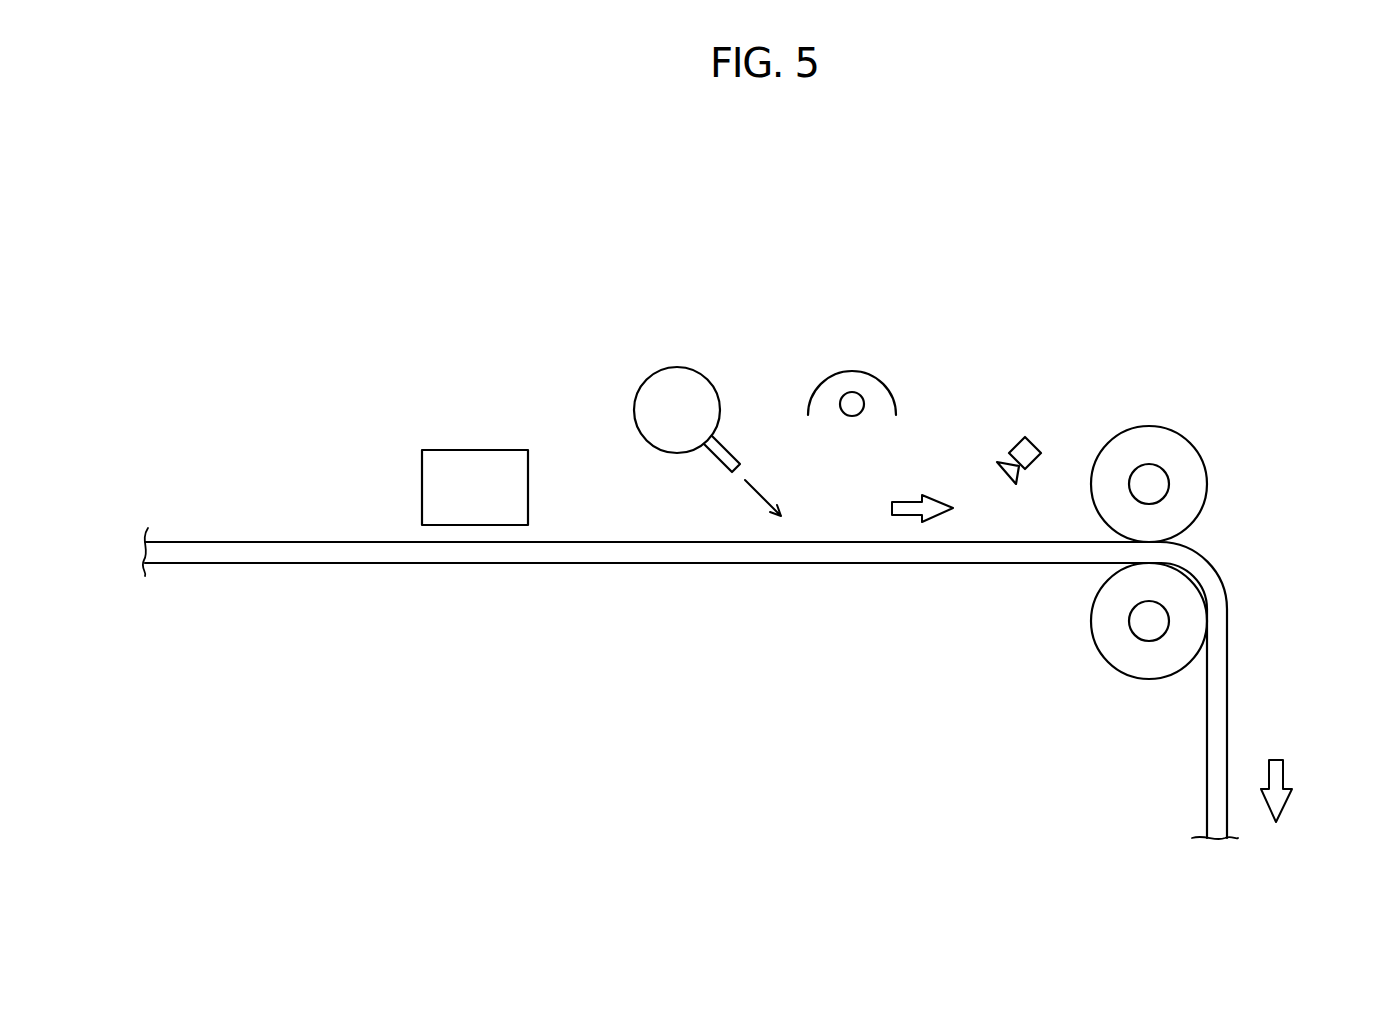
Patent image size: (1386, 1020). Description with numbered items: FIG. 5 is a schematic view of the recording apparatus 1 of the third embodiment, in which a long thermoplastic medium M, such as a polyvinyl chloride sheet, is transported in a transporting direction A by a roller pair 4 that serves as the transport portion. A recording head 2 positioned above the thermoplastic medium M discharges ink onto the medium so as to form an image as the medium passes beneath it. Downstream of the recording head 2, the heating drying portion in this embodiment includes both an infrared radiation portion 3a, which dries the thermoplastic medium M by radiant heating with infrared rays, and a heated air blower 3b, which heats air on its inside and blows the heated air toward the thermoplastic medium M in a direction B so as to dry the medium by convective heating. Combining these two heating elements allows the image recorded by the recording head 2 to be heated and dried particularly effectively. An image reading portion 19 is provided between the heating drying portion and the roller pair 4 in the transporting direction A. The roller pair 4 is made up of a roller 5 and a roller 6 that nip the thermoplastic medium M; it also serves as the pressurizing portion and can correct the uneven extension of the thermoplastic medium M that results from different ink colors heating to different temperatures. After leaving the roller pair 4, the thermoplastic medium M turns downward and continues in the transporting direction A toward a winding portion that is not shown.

The recording apparatus 1 is at (1145, 276).
The recording head 2 is at (472, 450).
The infrared radiation portion 3a is at (850, 366).
The heated air blower 3b is at (680, 367).
The roller pair 4 is at (1249, 468).
The roller 5 is at (1150, 427).
The roller 6 is at (1150, 679).
The image reading portion 19 is at (1023, 438).
The thermoplastic medium M is at (275, 540).
The transporting direction A is at (1105, 640).
The direction of heated air B is at (764, 492).